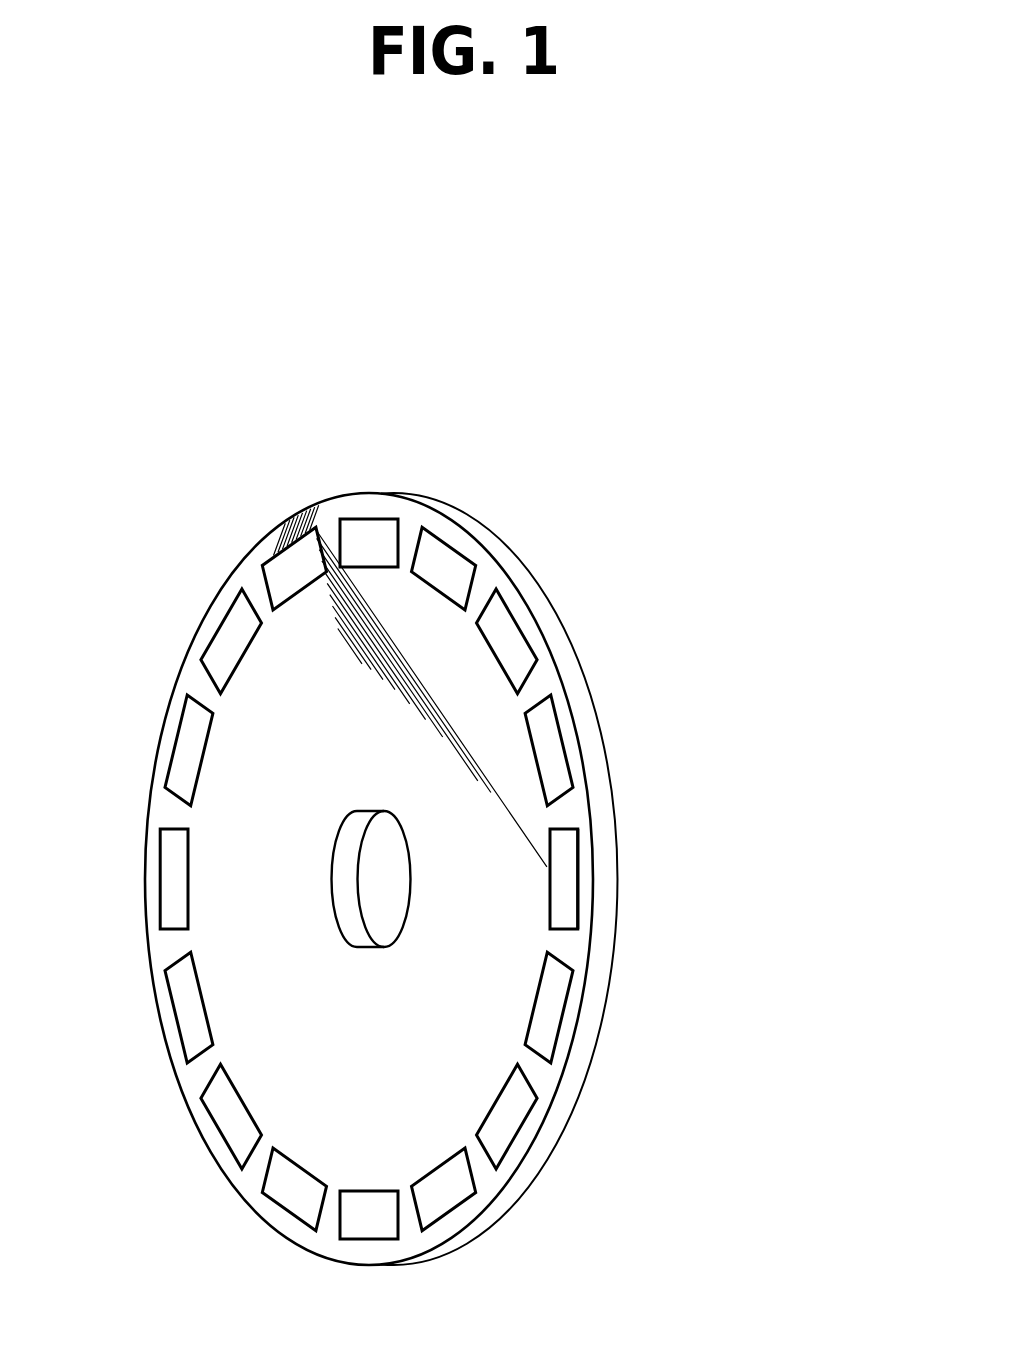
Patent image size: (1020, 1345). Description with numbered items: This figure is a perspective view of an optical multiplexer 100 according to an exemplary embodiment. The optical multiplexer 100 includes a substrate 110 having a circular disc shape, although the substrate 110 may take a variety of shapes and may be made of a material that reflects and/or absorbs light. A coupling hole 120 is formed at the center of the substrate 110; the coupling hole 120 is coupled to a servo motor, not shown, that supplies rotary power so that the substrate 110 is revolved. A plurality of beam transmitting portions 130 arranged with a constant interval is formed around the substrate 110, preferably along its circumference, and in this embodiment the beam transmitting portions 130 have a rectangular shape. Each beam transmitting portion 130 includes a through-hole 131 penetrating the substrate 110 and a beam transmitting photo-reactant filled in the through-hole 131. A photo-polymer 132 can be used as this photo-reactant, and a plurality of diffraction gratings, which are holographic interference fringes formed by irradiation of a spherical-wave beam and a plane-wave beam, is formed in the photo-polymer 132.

The optical multiplexer 100 is at (447, 830).
The substrate 110 is at (545, 680).
The coupling hole 120 is at (345, 877).
The beam transmitting portion 130 is at (695, 872).
The through-hole 131 is at (563, 890).
The photo-polymer 132 is at (578, 862).